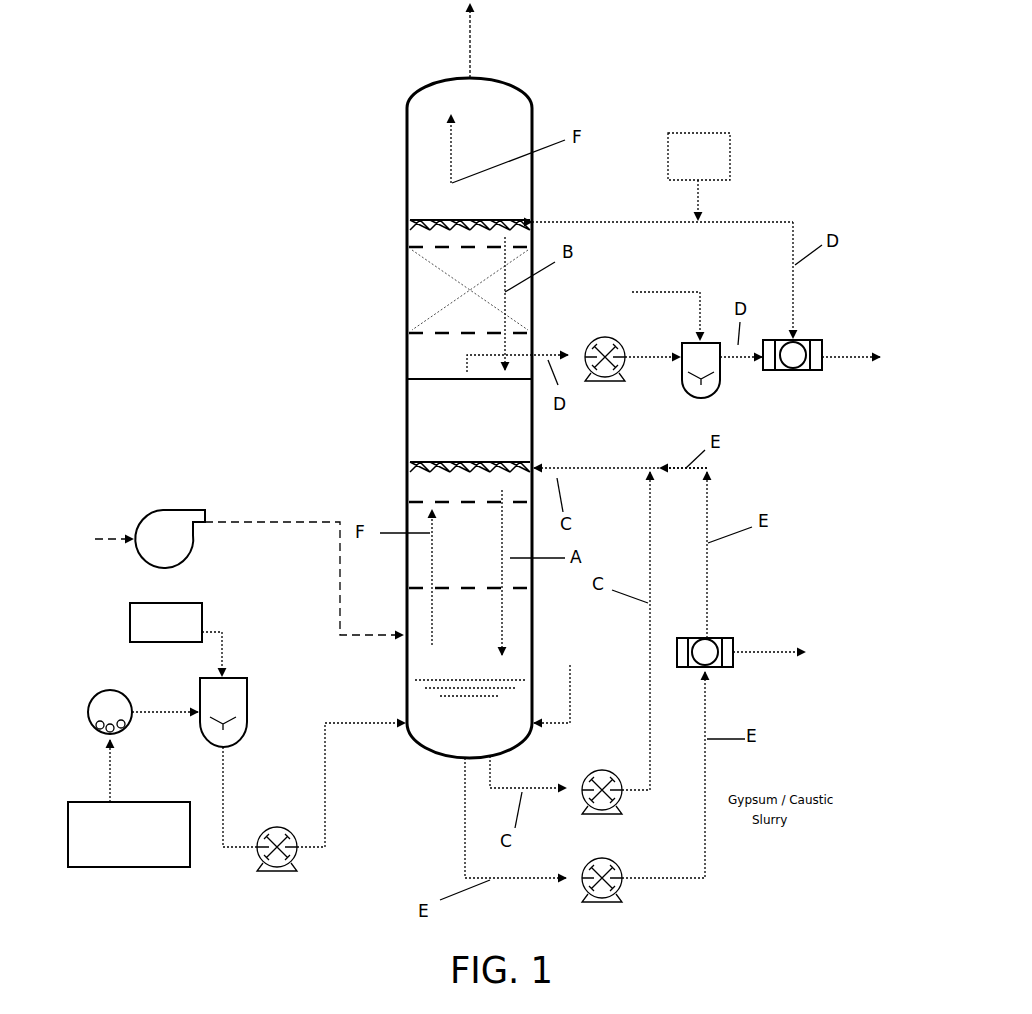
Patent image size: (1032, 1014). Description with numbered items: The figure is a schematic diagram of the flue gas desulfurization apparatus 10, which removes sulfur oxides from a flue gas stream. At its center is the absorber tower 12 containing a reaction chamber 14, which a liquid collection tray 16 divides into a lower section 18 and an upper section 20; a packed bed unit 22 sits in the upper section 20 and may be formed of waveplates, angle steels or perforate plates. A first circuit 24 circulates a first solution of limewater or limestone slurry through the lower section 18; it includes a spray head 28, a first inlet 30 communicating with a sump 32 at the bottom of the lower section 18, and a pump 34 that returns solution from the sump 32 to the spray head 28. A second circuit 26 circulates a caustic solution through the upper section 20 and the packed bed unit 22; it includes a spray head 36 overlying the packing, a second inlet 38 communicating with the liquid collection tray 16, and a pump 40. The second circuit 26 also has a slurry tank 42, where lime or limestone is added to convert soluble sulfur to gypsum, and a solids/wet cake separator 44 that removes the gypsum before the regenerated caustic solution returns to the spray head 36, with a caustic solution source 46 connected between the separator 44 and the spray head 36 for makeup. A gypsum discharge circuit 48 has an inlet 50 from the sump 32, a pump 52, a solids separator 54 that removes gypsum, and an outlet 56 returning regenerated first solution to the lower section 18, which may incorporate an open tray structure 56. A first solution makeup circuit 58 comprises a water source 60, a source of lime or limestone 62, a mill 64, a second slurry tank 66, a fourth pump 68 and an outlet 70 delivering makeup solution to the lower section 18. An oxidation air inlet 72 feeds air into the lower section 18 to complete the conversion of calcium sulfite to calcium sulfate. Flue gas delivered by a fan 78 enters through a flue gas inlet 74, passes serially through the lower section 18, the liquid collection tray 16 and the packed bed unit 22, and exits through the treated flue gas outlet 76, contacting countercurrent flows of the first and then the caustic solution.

The FGD apparatus 10 is at (690, 62).
The absorber tower 12 is at (407, 430).
The reaction chamber 14 is at (420, 404).
The liquid collection tray 16 is at (485, 380).
The lower section 18 is at (500, 450).
The upper section 20 is at (435, 163).
The packed bed unit 22 is at (420, 292).
The first circuit 24 is at (682, 588).
The second circuit 26 is at (806, 211).
The spray head 28 is at (410, 468).
The first inlet 30 is at (490, 756).
The sump 32 is at (438, 730).
The pump 34 is at (600, 770).
The spray head 36 is at (413, 236).
The second inlet 38 is at (533, 352).
The pump 40 is at (612, 340).
The slurry tank 42 is at (720, 393).
The solids/wet cake separator 44 is at (800, 372).
The caustic solution source 46 is at (730, 160).
The gypsum discharge circuit 48 is at (736, 617).
The inlet 50 is at (462, 757).
The pump 52 is at (615, 863).
The solids separator 54 is at (728, 668).
The open tray structure 56 is at (418, 556).
The first solution makeup circuit 58 is at (192, 926).
The water source 60 is at (205, 625).
The source of lime or limestone 62 is at (129, 867).
The mill 64 is at (126, 695).
The second slurry tank 66 is at (247, 681).
The fourth pump 68 is at (272, 828).
The outlet 70 is at (402, 720).
The oxidation air inlet 72 is at (530, 722).
The flue gas inlet 74 is at (403, 632).
The treated flue gas outlet 76 is at (473, 79).
The fan 78 is at (168, 510).